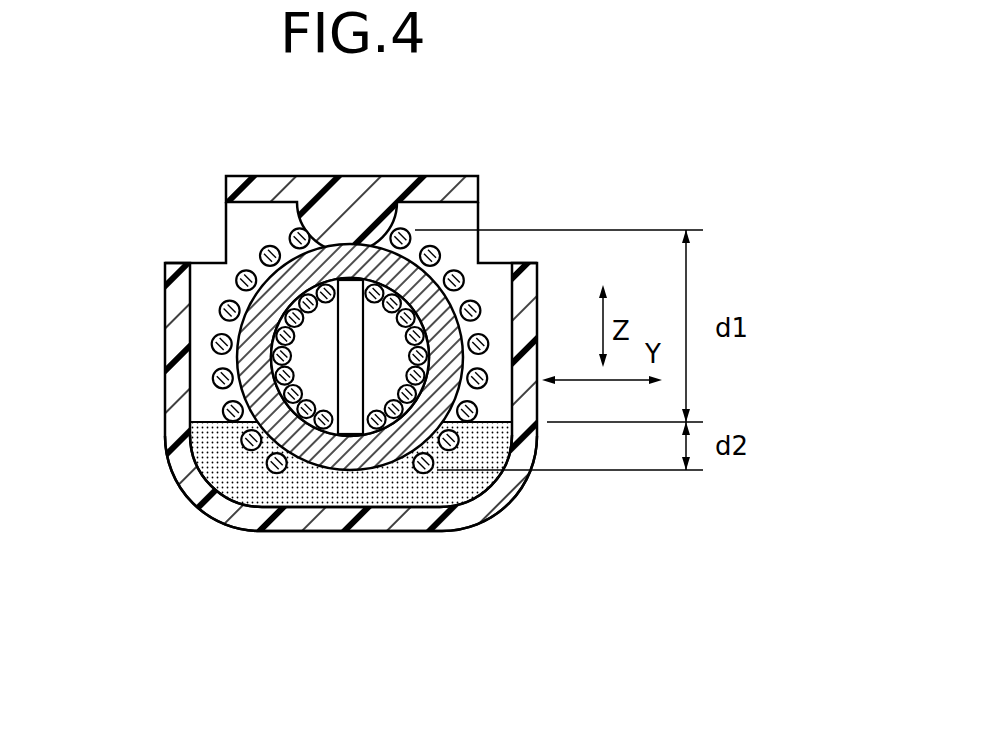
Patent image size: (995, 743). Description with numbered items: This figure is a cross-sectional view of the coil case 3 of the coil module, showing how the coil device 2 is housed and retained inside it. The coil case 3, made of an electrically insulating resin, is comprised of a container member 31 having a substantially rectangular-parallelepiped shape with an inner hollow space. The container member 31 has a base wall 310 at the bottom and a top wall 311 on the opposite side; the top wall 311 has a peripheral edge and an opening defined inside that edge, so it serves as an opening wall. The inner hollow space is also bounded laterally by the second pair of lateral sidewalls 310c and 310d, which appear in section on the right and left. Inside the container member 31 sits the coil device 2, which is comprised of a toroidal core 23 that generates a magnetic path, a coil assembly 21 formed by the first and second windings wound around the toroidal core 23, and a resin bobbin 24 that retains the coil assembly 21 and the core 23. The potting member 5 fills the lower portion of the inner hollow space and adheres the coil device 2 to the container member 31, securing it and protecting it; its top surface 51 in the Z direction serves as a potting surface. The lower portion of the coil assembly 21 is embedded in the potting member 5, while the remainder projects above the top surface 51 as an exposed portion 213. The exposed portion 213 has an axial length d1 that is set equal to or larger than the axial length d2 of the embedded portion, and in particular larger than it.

The coil device 2 is at (445, 242).
The coil assembly 21 is at (218, 379).
The exposed portion 213 is at (219, 336).
The toroidal core 23 is at (355, 457).
The bobbin 24 is at (387, 197).
The coil case 3 is at (500, 496).
The container member 31 is at (425, 518).
The base wall 310 is at (393, 517).
The lateral sidewall 310c is at (527, 484).
The lateral sidewall 310d is at (167, 456).
The top wall 311 is at (210, 263).
The potting member 5 is at (257, 488).
The top surface 51 is at (212, 414).